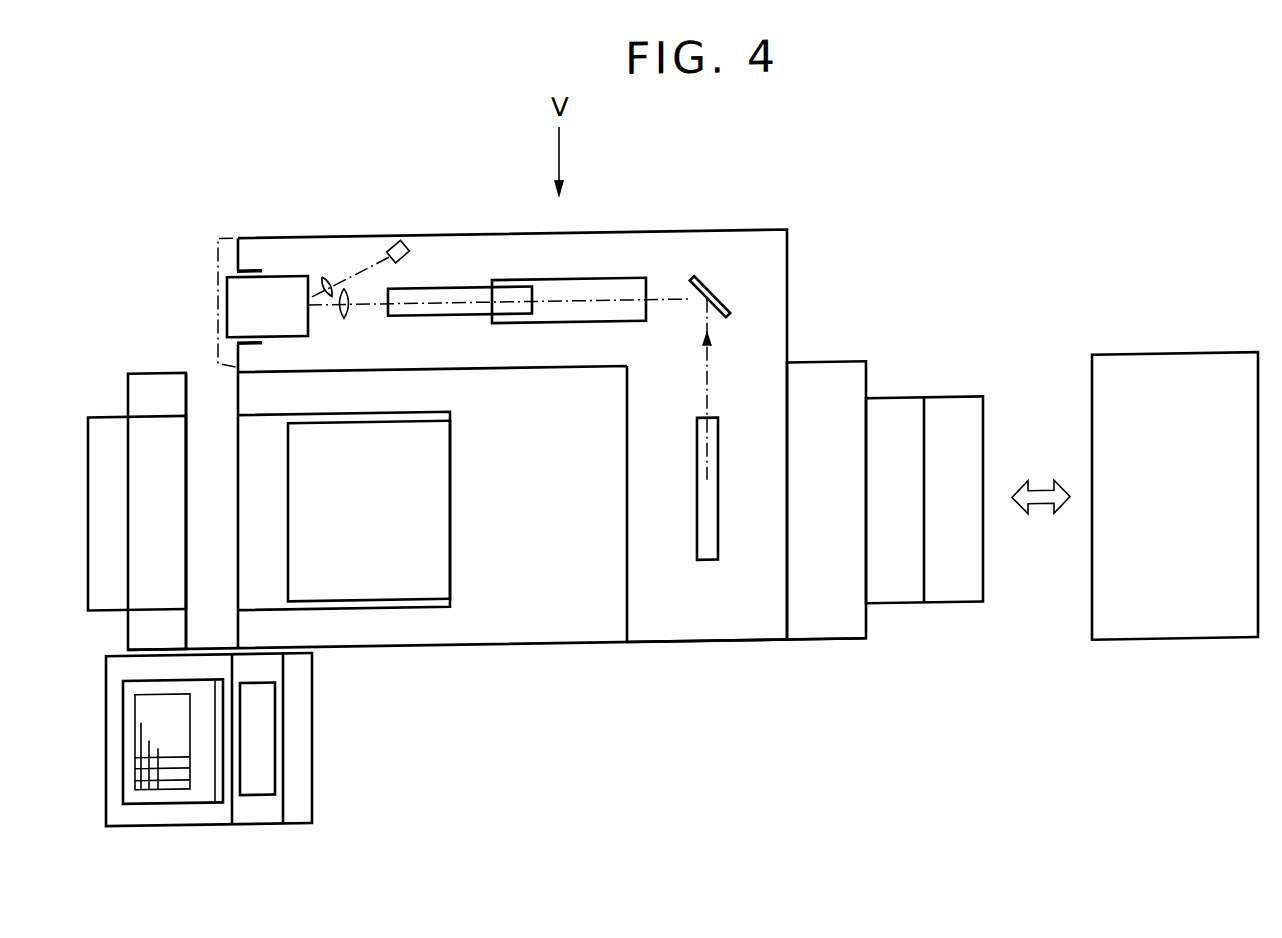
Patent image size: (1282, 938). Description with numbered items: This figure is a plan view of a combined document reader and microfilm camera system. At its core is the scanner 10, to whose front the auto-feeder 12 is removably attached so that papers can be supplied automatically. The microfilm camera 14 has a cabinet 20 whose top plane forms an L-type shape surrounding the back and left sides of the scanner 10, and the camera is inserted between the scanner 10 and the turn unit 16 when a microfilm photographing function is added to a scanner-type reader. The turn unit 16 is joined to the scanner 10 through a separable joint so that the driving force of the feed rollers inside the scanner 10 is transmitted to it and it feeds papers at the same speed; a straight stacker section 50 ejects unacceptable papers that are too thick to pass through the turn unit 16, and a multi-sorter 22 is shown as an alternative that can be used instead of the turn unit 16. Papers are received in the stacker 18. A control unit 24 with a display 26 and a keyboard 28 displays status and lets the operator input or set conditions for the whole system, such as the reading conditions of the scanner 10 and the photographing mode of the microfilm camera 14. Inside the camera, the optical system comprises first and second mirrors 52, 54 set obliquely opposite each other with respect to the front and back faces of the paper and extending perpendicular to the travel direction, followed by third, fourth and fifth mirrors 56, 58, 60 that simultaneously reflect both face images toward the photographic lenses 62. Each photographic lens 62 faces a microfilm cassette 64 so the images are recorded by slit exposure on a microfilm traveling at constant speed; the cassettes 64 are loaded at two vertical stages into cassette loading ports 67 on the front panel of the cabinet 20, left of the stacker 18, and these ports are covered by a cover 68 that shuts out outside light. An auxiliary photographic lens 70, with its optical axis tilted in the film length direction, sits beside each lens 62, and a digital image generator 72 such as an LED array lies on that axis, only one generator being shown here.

The scanner 10 is at (531, 644).
The auto-feeder 12 is at (128, 379).
The microfilm camera 14 is at (728, 648).
The turn unit 16 is at (833, 650).
The stacker 18 is at (393, 571).
The cabinet 20 is at (787, 250).
The multi-sorter 22 is at (1158, 649).
The control unit 24 is at (327, 789).
The display 26 is at (270, 823).
The keyboard 28 is at (210, 822).
The straight stacker section 50 is at (907, 609).
The first mirror 52 is at (661, 587).
The second mirror 54 is at (697, 556).
The third mirror 56 is at (723, 314).
The fourth mirror 58 is at (627, 280).
The fifth mirror 60 is at (458, 287).
The photographic lens 62 is at (345, 316).
The microfilm cassette 64 is at (277, 273).
The cassette loading port 67 is at (250, 273).
The cover 68 is at (217, 244).
The auxiliary photographic lens 70 is at (328, 277).
The digital image generator 72 is at (403, 243).